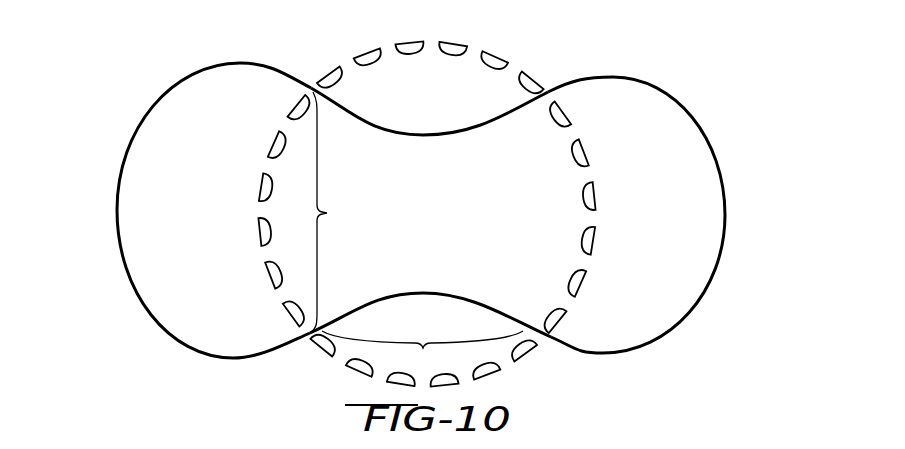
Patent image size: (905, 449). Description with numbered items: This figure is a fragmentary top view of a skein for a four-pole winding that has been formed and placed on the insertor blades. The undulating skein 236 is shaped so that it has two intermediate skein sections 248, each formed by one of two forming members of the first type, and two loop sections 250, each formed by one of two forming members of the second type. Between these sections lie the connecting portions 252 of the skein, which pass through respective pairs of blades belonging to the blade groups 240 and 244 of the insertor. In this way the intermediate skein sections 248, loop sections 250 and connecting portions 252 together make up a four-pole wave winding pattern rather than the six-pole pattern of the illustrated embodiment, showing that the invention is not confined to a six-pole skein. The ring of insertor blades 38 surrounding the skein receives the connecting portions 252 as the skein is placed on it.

The ring of protuberances 38 is at (496, 57).
The undulating skein 236 is at (421, 203).
The group of blades 240 is at (422, 333).
The group of blades 244 is at (340, 212).
The intermediate skein section 248 is at (436, 136).
The loop section 250 is at (118, 197).
The connecting portion 252 is at (312, 82).